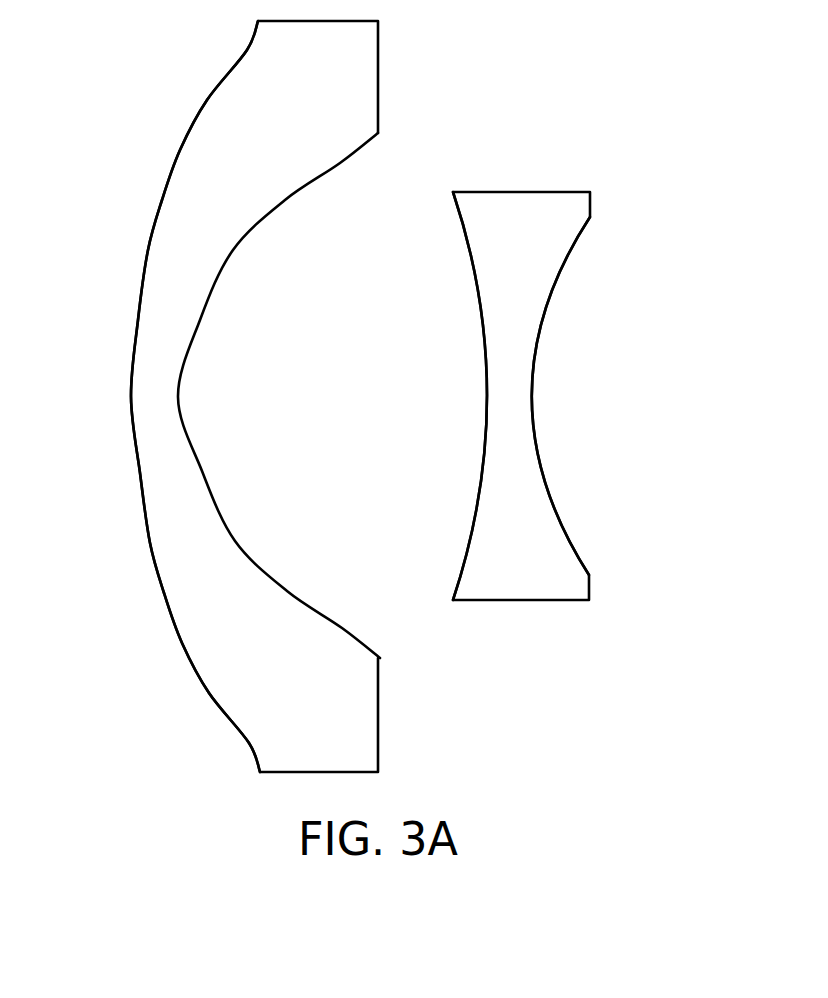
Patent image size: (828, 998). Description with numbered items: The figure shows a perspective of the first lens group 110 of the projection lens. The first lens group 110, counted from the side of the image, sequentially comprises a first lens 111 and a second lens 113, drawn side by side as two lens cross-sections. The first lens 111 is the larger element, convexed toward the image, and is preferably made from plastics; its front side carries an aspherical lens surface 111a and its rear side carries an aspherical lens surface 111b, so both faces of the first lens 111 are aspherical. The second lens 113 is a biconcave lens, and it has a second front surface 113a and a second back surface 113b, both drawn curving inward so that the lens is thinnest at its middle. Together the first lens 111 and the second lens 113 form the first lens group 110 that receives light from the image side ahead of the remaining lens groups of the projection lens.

The first lens group 110 is at (678, 793).
The first lens 111 is at (378, 716).
The aspherical lens surface 111a is at (162, 595).
The aspherical lens surface 111b is at (247, 548).
The second lens 113 is at (589, 586).
The second front surface 113a is at (470, 253).
The second back surface 113b is at (558, 515).